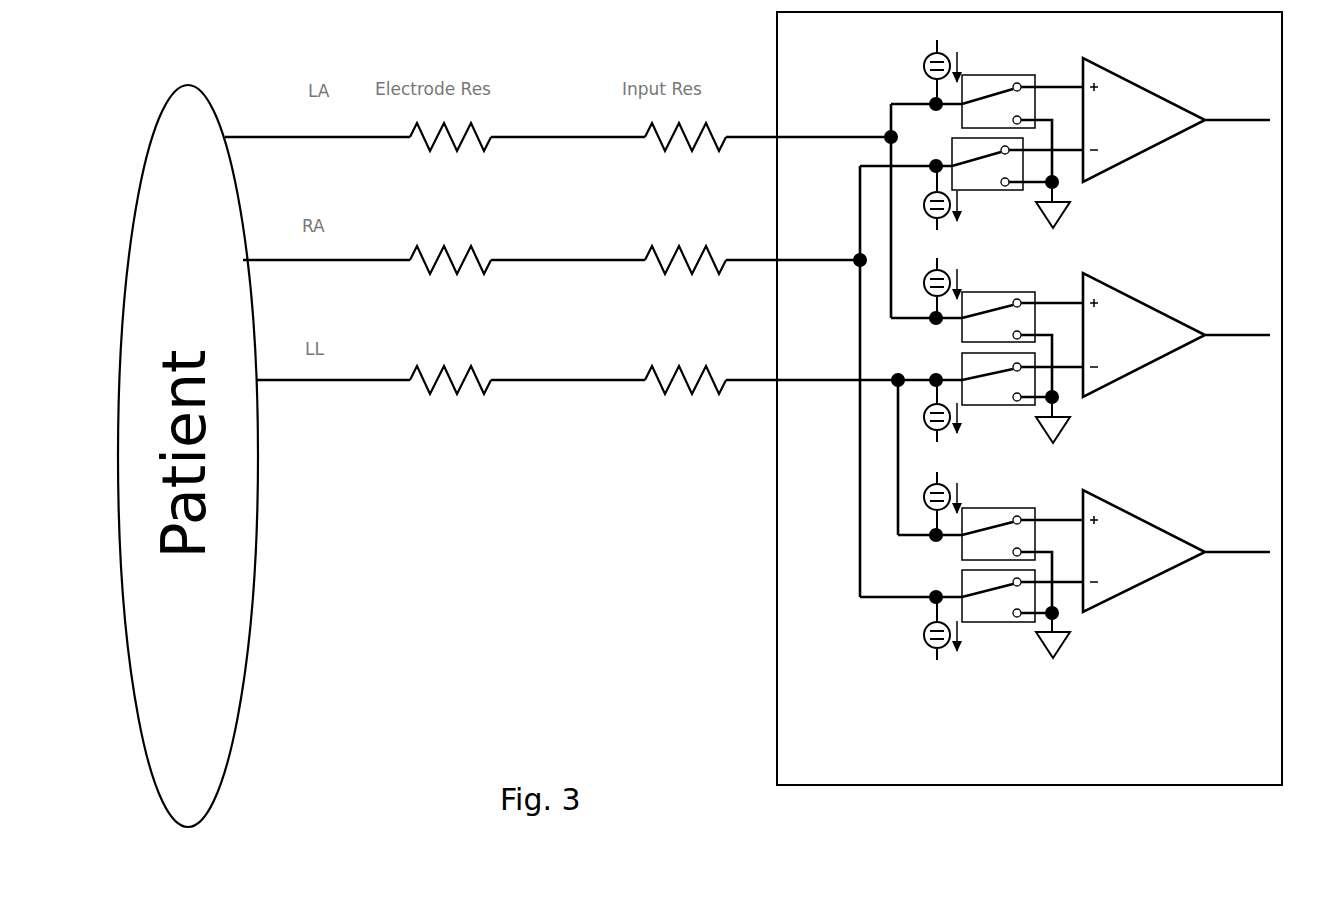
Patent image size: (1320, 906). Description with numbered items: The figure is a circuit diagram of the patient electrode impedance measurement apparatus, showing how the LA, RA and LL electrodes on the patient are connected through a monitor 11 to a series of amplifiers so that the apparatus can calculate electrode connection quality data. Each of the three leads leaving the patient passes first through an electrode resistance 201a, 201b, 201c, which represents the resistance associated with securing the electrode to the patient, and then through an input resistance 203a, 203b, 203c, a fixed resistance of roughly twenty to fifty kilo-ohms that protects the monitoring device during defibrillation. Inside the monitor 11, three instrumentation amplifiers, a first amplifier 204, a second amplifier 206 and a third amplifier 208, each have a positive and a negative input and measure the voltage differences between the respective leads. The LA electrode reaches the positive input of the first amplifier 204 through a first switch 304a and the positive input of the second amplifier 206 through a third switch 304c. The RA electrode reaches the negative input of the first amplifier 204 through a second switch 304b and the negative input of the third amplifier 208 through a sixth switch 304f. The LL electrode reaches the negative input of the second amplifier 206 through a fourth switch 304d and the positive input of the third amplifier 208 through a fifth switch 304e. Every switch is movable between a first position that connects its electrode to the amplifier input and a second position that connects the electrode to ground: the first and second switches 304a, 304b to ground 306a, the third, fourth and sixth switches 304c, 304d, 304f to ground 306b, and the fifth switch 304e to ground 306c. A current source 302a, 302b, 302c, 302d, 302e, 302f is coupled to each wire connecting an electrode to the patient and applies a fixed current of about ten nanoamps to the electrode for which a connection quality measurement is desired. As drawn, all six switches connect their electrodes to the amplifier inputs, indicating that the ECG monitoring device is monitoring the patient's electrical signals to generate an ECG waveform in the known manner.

The monitor 11 is at (1029, 398).
The electrode resistance 201a is at (455, 143).
The electrode resistance 201b is at (455, 267).
The electrode resistance 201c is at (458, 402).
The input resistance 203a is at (655, 148).
The input resistance 203b is at (655, 270).
The input resistance 203c is at (668, 405).
The first amplifier 204 is at (1156, 148).
The second amplifier 206 is at (1156, 362).
The third amplifier 208 is at (1166, 576).
The current source 302a is at (921, 65).
The current source 302b is at (922, 197).
The current source 302c is at (922, 283).
The current source 302d is at (922, 417).
The current source 302e is at (922, 490).
The current source 302f is at (918, 641).
The first switch 304a is at (990, 74).
The second switch 304b is at (987, 192).
The third switch 304c is at (992, 291).
The fourth switch 304d is at (990, 407).
The fifth switch 304e is at (993, 506).
The sixth switch 304f is at (993, 624).
The ground 306a is at (1068, 217).
The ground 306b is at (1068, 436).
The ground 306c is at (1068, 645).